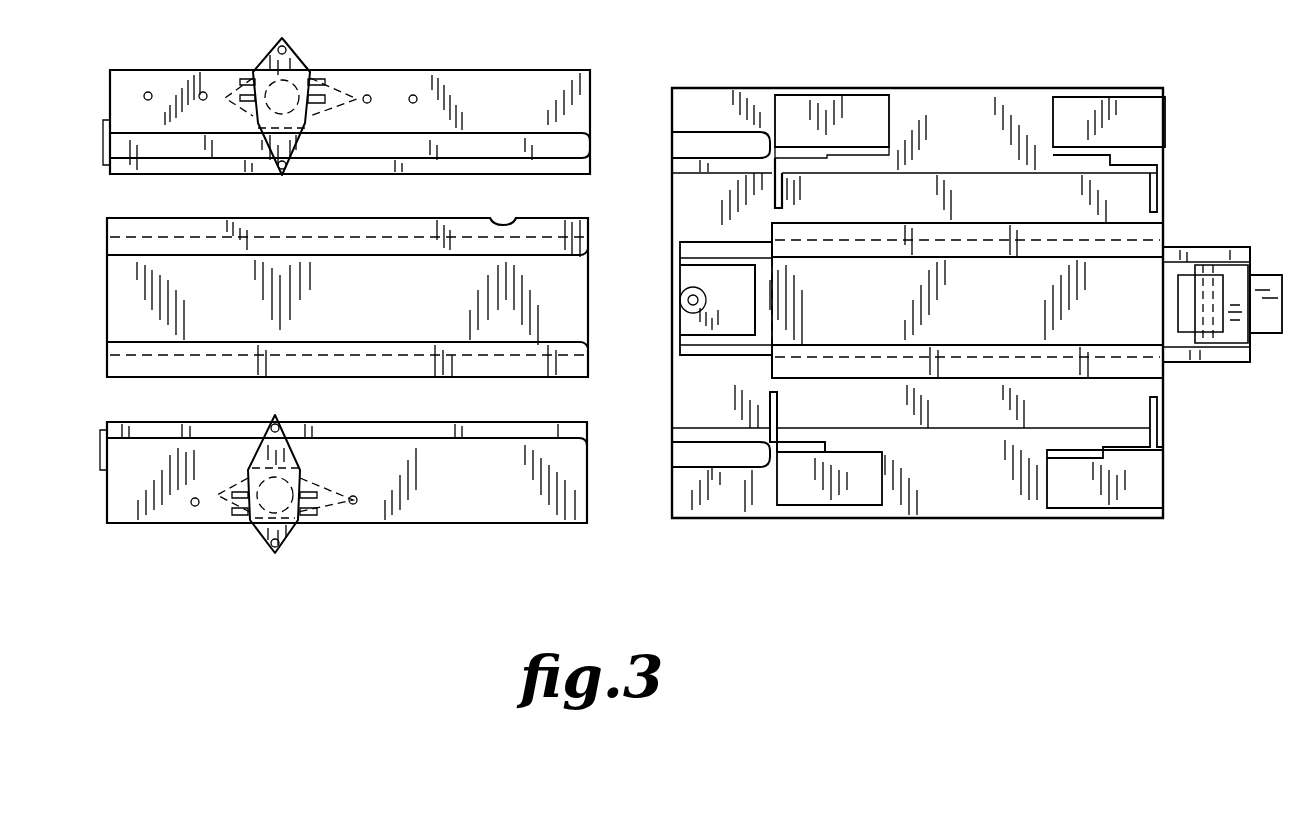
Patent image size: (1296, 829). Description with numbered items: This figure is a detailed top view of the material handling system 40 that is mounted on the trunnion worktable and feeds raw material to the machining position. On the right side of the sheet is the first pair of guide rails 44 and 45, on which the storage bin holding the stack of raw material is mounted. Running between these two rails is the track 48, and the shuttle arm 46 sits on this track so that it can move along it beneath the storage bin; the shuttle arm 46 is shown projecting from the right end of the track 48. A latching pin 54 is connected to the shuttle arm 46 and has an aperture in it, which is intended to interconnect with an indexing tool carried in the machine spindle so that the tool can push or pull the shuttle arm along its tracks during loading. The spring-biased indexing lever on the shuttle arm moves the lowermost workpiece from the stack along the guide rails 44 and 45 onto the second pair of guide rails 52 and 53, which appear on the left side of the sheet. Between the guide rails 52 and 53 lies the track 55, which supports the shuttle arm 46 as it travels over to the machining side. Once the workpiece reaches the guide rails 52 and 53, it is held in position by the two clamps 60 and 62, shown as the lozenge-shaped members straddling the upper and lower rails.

The material handling system 40 is at (662, 572).
The guide rail 44 is at (1008, 518).
The guide rail 45 is at (972, 92).
The shuttle arm 46 is at (1227, 360).
The track 48 is at (892, 375).
The guide rail 52 is at (138, 425).
The guide rail 53 is at (118, 172).
The latching pin 54 is at (688, 297).
The track 55 is at (462, 378).
The clamp 60 is at (298, 62).
The clamp 62 is at (292, 530).